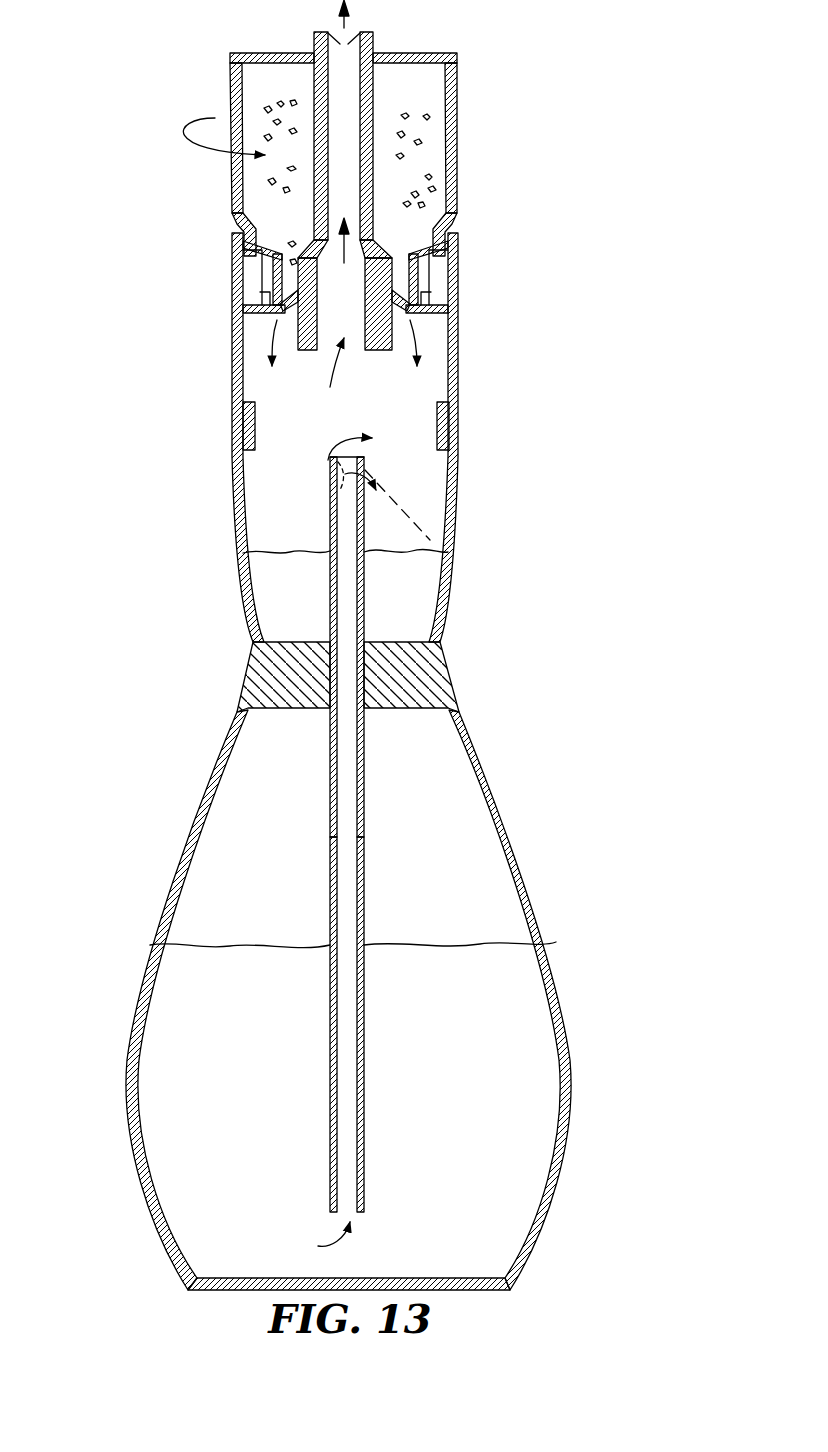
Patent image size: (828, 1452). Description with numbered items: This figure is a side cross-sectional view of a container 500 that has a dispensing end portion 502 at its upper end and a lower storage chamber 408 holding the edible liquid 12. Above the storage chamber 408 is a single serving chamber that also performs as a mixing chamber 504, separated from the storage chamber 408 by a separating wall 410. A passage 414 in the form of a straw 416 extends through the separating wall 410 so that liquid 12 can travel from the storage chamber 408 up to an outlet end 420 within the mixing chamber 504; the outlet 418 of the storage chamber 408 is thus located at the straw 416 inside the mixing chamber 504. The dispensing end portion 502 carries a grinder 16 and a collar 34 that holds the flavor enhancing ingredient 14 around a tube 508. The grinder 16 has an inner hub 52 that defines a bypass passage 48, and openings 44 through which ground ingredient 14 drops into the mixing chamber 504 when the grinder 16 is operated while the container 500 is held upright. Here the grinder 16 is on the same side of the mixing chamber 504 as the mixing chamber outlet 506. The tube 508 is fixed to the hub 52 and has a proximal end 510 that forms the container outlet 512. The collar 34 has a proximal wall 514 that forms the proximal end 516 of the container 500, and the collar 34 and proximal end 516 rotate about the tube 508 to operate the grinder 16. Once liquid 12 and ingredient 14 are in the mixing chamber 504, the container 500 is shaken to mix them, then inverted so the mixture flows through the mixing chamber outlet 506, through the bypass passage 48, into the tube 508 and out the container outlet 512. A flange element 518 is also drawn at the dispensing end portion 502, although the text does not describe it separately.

The container 500 is at (578, 510).
The dispensing end portion 502 is at (180, 200).
The single serving mixing chamber 504 is at (423, 503).
The mixing chamber outlet 506 is at (367, 352).
The tube 508 is at (367, 107).
The proximal end 510 is at (370, 30).
The container outlet 512 is at (316, 30).
The proximal wall 514 is at (258, 58).
The proximal end 516 is at (414, 58).
The collar 34 is at (451, 140).
The hub 52 is at (377, 240).
The bypass passage 48 is at (393, 240).
The flavor enhancing ingredient 14 is at (267, 107).
The grinder 16 is at (277, 275).
The flange 518 is at (252, 314).
The openings 44 is at (288, 310).
The outlet end 420 is at (340, 503).
The edible liquid 12 is at (303, 545).
The outlet 418 is at (440, 549).
The separating wall 410 is at (400, 650).
The passage 414 is at (350, 775).
The straw 416 is at (350, 1025).
The storage chamber 408 is at (502, 882).